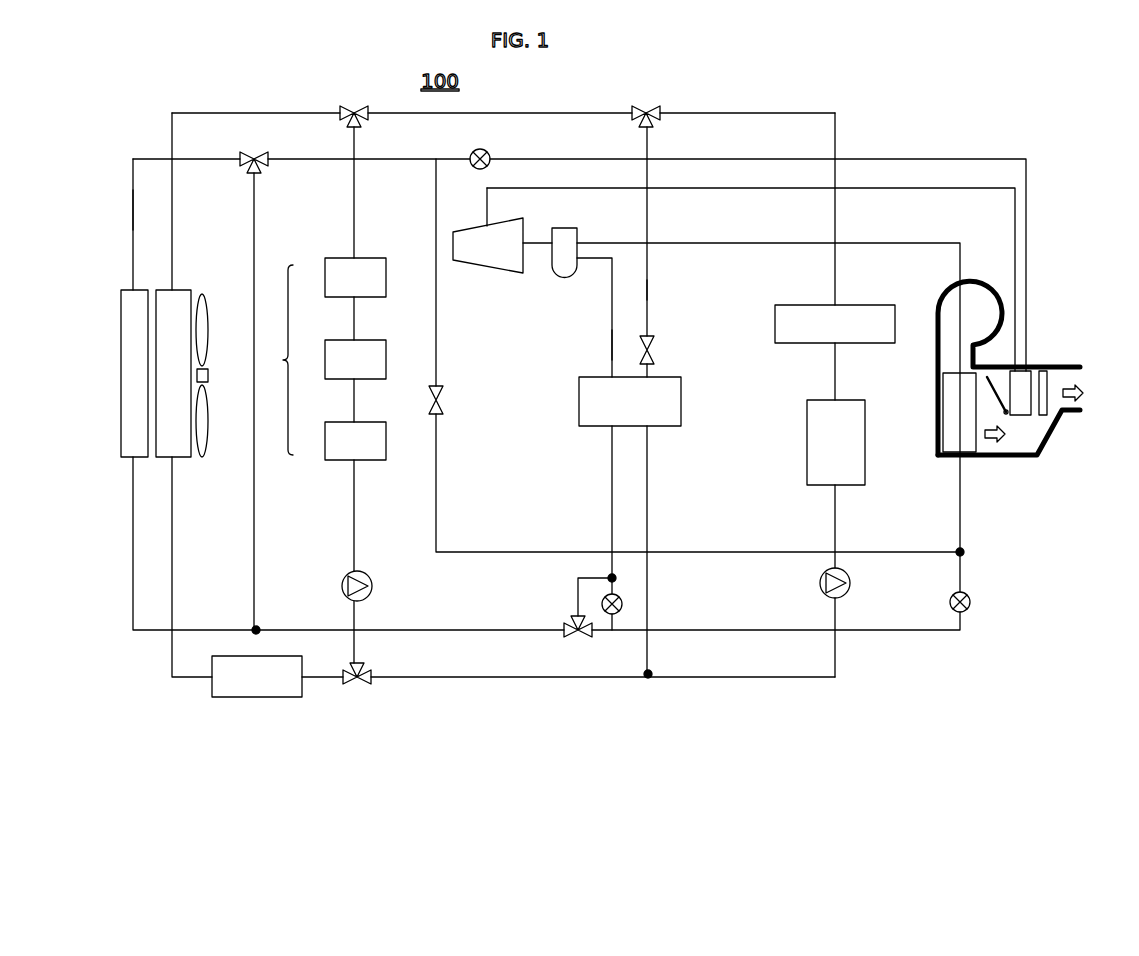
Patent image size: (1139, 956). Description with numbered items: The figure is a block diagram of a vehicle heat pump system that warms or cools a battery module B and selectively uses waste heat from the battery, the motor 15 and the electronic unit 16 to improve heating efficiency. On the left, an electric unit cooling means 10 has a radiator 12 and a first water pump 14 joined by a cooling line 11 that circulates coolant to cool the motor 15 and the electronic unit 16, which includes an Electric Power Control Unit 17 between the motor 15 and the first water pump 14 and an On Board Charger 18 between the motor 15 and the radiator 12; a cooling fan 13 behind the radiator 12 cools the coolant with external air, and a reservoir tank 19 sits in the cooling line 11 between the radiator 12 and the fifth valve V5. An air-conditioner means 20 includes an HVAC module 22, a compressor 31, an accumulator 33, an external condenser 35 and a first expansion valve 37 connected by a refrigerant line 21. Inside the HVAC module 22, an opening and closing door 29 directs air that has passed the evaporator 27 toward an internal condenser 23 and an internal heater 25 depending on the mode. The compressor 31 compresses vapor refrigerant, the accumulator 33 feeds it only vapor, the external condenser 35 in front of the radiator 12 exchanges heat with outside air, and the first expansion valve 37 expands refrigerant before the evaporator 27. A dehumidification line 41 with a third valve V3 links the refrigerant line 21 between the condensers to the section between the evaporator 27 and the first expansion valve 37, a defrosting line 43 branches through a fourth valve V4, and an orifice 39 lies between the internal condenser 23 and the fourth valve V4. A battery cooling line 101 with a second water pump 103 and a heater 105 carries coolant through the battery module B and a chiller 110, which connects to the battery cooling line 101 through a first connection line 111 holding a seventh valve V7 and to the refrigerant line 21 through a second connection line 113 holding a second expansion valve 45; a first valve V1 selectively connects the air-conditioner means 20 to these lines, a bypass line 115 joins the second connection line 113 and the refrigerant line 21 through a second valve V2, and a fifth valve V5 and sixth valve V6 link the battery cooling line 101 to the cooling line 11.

The electric unit cooling means 10 is at (207, 111).
The cooling line 11 is at (353, 190).
The radiator 12 is at (180, 457).
The cooling fan 13 is at (210, 375).
The first water pump 14 is at (368, 578).
The motor 15 is at (386, 360).
The electronic unit 16 is at (275, 360).
The Electric Power Control Unit (EPCU) 17 is at (325, 443).
The On Board Charger (OBC) 18 is at (325, 278).
The reservoir tank 19 is at (212, 688).
The air-conditioner means 20 is at (133, 576).
The refrigerant line 21 is at (133, 205).
The HVAC module 22 is at (1053, 335).
The internal condenser 23 is at (1033, 415).
The internal heater 25 is at (1047, 412).
The evaporator 27 is at (976, 450).
The opening and closing door 29 is at (998, 405).
The compressor 31 is at (490, 273).
The accumulator 33 is at (565, 278).
The external condenser 35 is at (121, 375).
The first expansion valve 37 is at (970, 602).
The orifice 39 is at (487, 152).
The dehumidification line 41 is at (436, 490).
The defrosting line 43 is at (254, 535).
The second expansion valve 45 is at (620, 612).
The battery cooling line 101 is at (835, 217).
The second water pump 103 is at (848, 590).
The heater 105 is at (875, 305).
The chiller 110 is at (681, 400).
The first connection line 111 is at (647, 290).
The second connection line 113 is at (612, 348).
The bypass line 115 is at (578, 598).
The battery module B is at (865, 443).
The first valve V1 is at (640, 121).
The second valve V2 is at (573, 640).
The third valve V3 is at (444, 407).
The fourth valve V4 is at (254, 152).
The fifth valve V5 is at (352, 686).
The sixth valve V6 is at (352, 106).
The seventh valve V7 is at (655, 350).